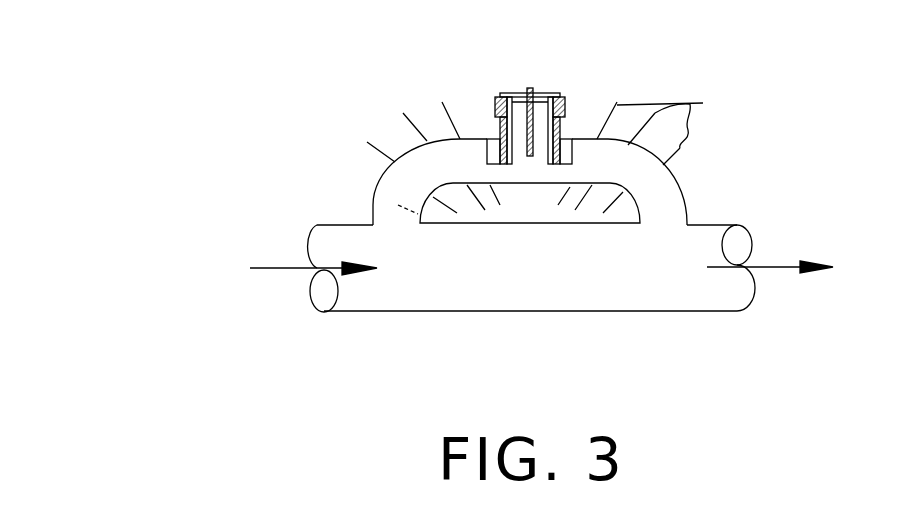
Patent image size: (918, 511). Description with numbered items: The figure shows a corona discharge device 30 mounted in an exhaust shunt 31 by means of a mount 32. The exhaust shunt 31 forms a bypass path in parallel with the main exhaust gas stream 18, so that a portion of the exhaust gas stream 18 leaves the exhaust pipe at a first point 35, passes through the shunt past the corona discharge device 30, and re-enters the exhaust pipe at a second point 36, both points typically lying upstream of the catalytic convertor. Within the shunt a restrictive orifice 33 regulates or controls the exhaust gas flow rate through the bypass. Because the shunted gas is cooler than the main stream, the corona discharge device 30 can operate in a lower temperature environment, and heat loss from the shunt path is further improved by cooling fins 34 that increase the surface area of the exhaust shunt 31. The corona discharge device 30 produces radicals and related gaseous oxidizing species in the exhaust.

The exhaust gas stream 18 is at (773, 269).
The corona discharge device 30 is at (552, 95).
The exhaust shunt 31 is at (603, 160).
The mount 32 is at (565, 140).
The restrictive orifice 33 is at (395, 200).
The cooling fins 34 is at (703, 103).
The first point 35 is at (397, 227).
The second point 36 is at (663, 223).